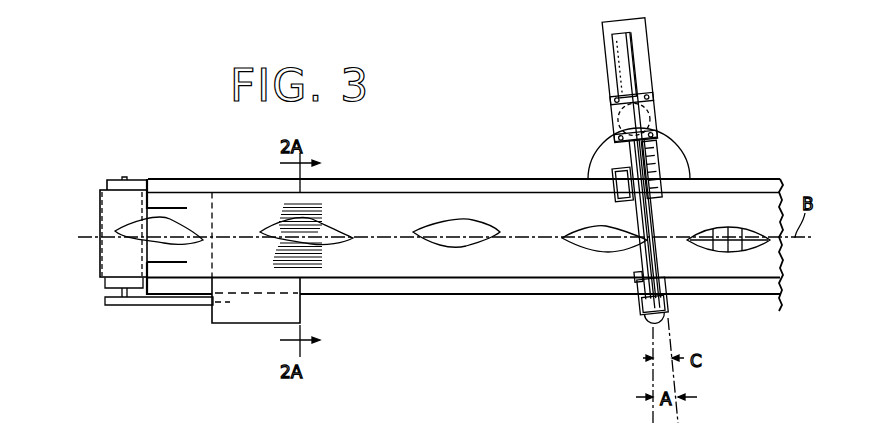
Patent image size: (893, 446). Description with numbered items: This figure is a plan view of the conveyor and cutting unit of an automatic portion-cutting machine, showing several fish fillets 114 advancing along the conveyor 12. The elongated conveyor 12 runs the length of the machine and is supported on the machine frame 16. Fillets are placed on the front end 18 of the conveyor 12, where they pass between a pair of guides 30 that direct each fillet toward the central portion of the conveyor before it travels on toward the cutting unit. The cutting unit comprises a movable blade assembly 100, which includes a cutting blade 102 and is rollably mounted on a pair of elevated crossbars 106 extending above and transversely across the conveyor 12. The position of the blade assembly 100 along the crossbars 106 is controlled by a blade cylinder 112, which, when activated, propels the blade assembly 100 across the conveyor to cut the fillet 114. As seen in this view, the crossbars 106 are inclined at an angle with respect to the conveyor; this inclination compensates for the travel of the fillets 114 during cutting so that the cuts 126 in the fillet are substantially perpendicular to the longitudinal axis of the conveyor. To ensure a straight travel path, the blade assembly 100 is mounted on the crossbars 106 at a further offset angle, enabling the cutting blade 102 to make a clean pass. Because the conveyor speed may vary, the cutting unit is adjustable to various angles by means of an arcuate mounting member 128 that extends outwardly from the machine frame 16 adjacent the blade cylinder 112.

The conveyor 12 is at (398, 213).
The machine frame 16 is at (552, 184).
The front end 18 is at (100, 222).
The guides 30 is at (170, 208).
The blade assembly 100 is at (686, 153).
The cutting blade 102 is at (697, 165).
The crossbars 106 is at (624, 235).
The blade cylinder 112 is at (673, 160).
The fish fillet 114 is at (260, 237).
The cuts 126 is at (747, 230).
The arcuate mounting member 128 is at (673, 134).